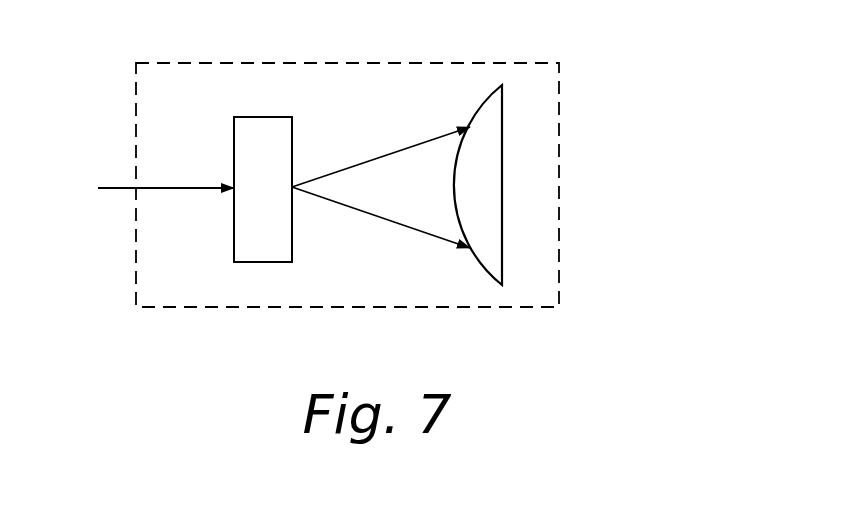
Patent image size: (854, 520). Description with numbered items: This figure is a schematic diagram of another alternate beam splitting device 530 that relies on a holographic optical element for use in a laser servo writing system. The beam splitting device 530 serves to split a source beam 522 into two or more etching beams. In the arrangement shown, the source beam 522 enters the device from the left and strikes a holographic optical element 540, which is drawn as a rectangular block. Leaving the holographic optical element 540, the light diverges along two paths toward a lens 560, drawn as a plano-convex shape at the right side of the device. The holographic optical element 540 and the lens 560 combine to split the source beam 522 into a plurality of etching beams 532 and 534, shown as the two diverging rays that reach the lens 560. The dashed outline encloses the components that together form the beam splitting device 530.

The source beam 522 is at (115, 186).
The beam splitting device 530 is at (467, 62).
The etching beam 532 is at (363, 162).
The etching beam 534 is at (365, 214).
The holographic optical element 540 is at (268, 117).
The lens 560 is at (503, 212).